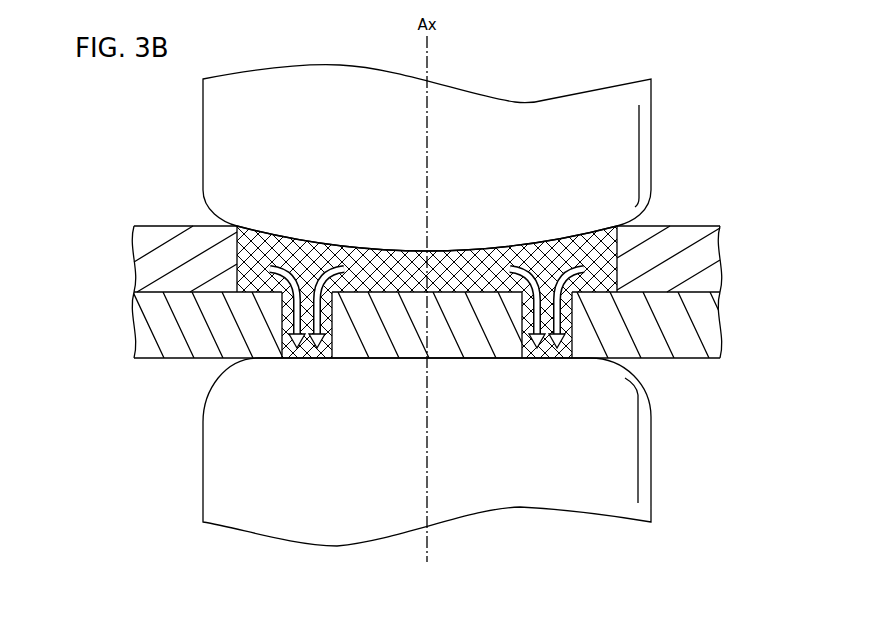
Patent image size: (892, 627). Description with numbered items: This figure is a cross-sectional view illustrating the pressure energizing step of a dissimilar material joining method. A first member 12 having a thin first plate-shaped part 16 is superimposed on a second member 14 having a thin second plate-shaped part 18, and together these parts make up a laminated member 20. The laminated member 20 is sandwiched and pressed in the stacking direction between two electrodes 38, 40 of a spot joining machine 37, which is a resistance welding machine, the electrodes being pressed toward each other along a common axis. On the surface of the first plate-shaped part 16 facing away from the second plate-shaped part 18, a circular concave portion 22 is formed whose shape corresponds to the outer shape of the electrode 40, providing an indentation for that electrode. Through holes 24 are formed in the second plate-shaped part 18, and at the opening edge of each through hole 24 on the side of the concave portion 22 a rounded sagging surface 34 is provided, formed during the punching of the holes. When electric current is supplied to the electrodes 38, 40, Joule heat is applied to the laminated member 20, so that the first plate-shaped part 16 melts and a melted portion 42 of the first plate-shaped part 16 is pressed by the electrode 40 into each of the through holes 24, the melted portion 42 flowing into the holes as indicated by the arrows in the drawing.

The first member 12 is at (418, 259).
The second member 14 is at (418, 350).
The first plate-shaped part 16 is at (713, 259).
The second plate-shaped part 18 is at (713, 328).
The laminated member 20 is at (762, 246).
The concave portion 22 is at (395, 240).
The through holes 24 is at (289, 352).
The sagging surface 34 is at (281, 297).
The spot joining machine 37 is at (664, 69).
The electrode 38 is at (620, 467).
The electrode 40 is at (622, 147).
The melted portion 42 is at (462, 260).